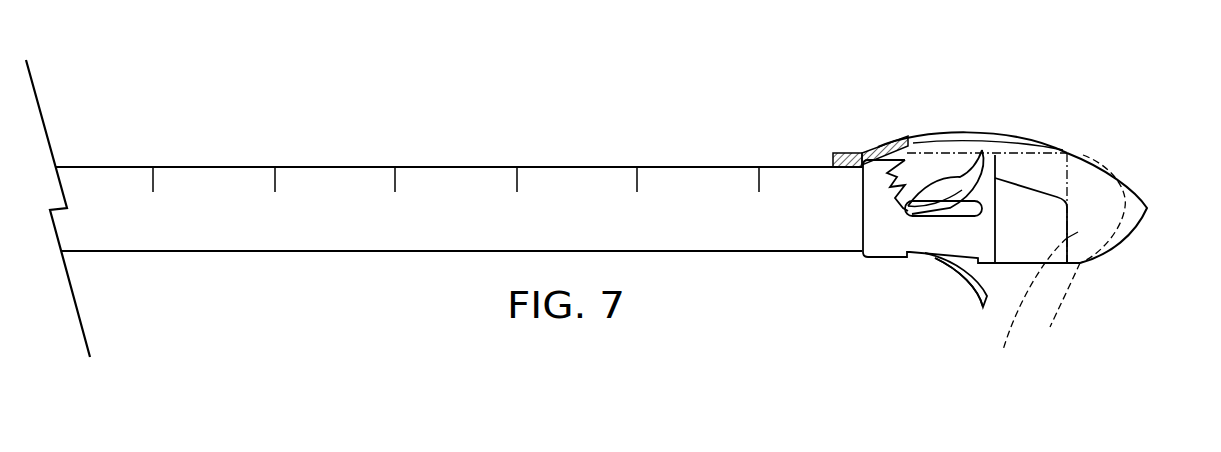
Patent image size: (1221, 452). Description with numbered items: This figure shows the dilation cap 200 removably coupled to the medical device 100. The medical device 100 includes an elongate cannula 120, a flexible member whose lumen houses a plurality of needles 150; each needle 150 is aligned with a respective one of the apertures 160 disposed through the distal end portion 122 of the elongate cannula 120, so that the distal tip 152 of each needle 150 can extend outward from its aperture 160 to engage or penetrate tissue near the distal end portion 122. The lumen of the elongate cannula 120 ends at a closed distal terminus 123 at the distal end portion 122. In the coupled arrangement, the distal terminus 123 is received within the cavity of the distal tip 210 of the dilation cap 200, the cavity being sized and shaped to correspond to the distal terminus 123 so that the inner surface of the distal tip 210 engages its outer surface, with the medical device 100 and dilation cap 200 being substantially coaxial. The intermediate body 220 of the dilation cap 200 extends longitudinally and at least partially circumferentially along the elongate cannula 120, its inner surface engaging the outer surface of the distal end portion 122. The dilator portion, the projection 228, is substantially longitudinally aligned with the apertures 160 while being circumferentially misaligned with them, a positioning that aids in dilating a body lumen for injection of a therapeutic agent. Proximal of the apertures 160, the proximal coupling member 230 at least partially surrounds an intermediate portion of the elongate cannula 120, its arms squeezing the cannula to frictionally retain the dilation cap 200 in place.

The medical device 100 is at (598, 146).
The elongate cannula 120 is at (665, 167).
The distal end portion 122 is at (1029, 308).
The distal terminus 123 is at (1052, 312).
The needles 150 is at (957, 268).
The distal tip 152 is at (978, 301).
The apertures 160 is at (907, 253).
The dilation cap 200 is at (1068, 137).
The distal tip 210 is at (1135, 187).
The intermediate body 220 is at (957, 104).
The projection 228 is at (917, 138).
The proximal coupling member 230 is at (844, 148).